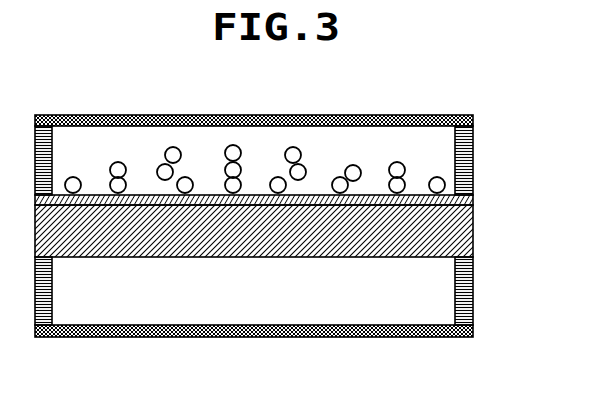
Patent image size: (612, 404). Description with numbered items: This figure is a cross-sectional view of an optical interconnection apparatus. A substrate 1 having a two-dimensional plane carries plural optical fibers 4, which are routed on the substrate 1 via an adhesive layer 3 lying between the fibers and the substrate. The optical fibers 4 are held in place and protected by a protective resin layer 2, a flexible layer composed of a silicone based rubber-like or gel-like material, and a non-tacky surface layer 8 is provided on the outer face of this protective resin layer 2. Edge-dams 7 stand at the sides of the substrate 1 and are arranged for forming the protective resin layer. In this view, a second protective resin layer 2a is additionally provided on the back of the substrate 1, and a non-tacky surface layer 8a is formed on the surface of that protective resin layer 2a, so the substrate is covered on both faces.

The substrate 1 is at (473, 232).
The protective resin layer 2 is at (203, 132).
The protective resin layer 2a is at (230, 295).
The adhesive layer 3 is at (473, 197).
The optical fiber 4 is at (353, 165).
The edge-dam 7 is at (465, 150).
The non-tacky surface layer 8 is at (427, 122).
The non-tacky surface layer 8a is at (363, 325).